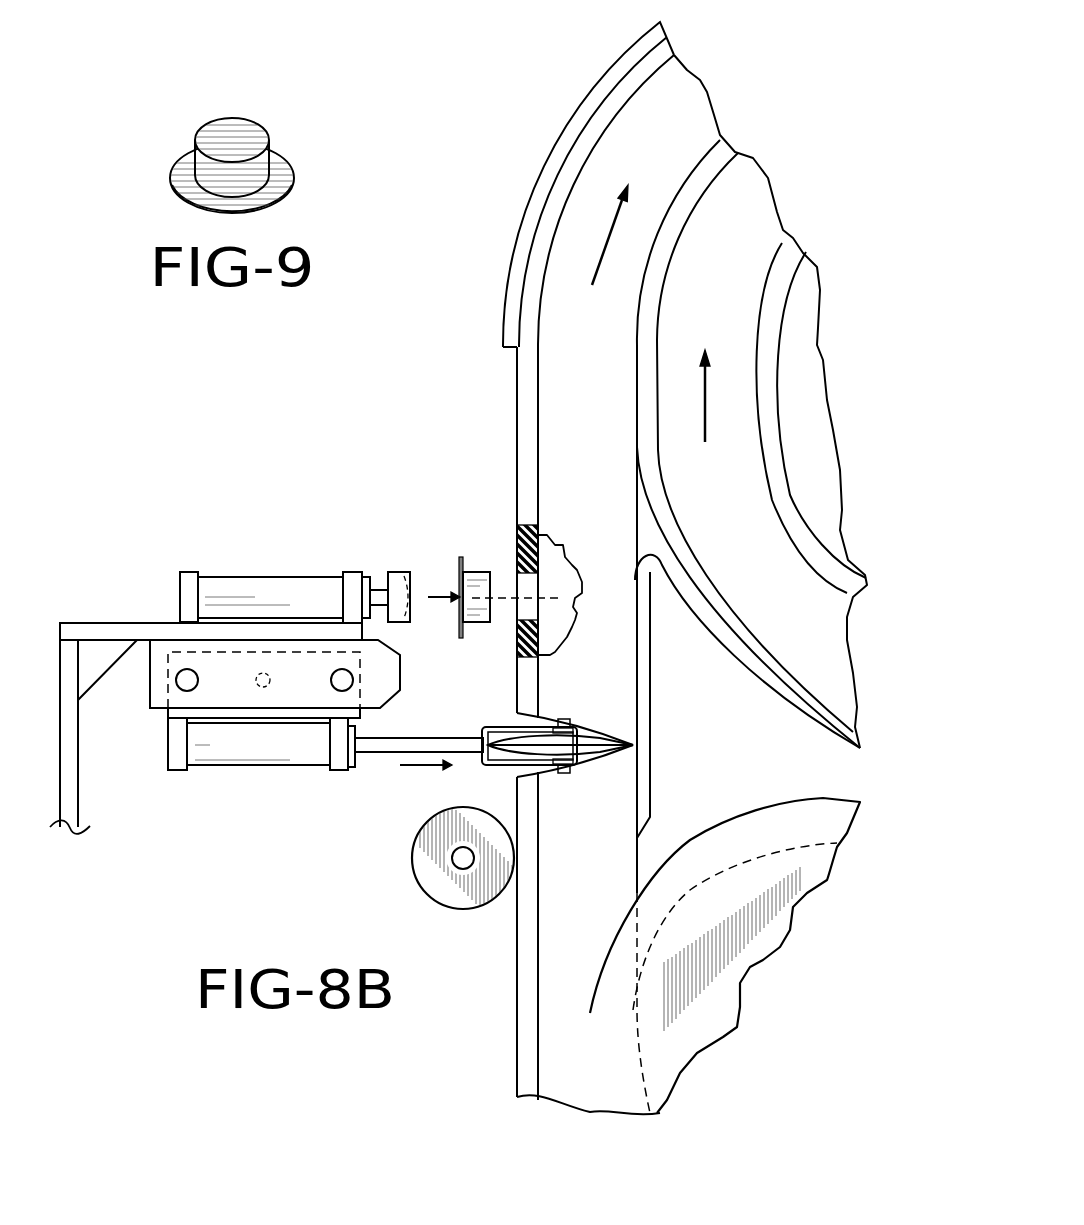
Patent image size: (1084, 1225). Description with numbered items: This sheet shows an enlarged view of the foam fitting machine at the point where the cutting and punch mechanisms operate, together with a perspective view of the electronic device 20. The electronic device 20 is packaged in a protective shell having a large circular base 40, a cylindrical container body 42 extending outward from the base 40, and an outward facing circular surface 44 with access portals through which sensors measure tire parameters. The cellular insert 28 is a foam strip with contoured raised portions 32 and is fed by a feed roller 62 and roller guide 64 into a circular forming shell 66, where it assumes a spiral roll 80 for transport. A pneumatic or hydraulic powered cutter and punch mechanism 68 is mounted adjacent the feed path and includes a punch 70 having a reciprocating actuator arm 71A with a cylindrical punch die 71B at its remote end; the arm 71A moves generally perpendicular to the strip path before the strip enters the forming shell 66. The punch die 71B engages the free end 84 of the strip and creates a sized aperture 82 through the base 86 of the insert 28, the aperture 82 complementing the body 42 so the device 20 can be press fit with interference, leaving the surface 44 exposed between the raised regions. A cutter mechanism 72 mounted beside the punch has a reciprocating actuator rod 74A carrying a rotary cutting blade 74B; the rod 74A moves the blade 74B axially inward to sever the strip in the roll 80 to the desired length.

In FIG. 9, the electronic device 20 is at (240, 115).
In FIG. 8B, the electronic device 20 is at (486, 563).
In FIG. 8B, the cellular insert 28 is at (625, 568).
In FIG. 8B, the raised portion 32 is at (578, 327).
In FIG. 9, the circular base 40 is at (288, 165).
In FIG. 8B, the circular base 40 is at (458, 618).
In FIG. 9, the cylindrical container body 42 is at (212, 172).
In FIG. 8B, the cylindrical container body 42 is at (481, 610).
In FIG. 9, the circular surface 44 is at (225, 132).
In FIG. 8B, the circular surface 44 is at (483, 585).
In FIG. 8B, the feed roller 62 is at (440, 883).
In FIG. 8B, the roller guide 64 is at (667, 1053).
In FIG. 8B, the circular forming shell 66 is at (570, 116).
In FIG. 8B, the cutter and punch mechanism 68 is at (341, 645).
In FIG. 8B, the punch 70 is at (265, 590).
In FIG. 8B, the reciprocating actuator arm 71A is at (380, 598).
In FIG. 8B, the cylindrical punch die 71B is at (400, 576).
In FIG. 8B, the cutter mechanism 72 is at (237, 740).
In FIG. 8B, the reciprocating actuator rod 74A is at (393, 738).
In FIG. 8B, the rotary cutting blade 74B is at (522, 748).
In FIG. 8B, the spiral roll 80 is at (740, 225).
In FIG. 8B, the aperture 82 is at (528, 622).
In FIG. 8B, the free end 84 is at (577, 681).
In FIG. 8B, the base 86 is at (528, 431).